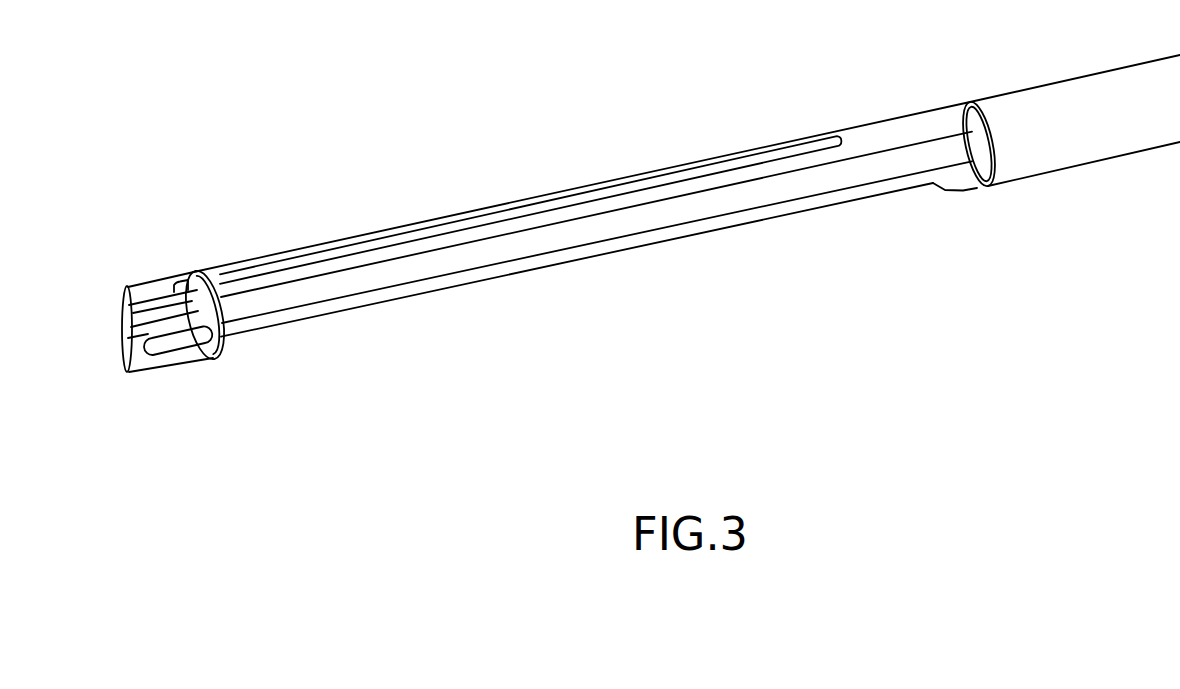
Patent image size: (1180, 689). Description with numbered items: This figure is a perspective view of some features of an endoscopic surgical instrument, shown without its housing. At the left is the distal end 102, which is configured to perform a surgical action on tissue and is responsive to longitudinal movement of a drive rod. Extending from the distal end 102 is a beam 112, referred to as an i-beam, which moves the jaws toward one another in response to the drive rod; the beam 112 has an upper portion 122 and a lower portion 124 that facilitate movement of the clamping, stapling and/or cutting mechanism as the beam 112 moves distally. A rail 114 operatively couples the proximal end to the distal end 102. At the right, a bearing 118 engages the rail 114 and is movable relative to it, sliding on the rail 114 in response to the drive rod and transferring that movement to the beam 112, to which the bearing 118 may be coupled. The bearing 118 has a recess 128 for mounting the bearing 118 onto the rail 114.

The distal end 102 is at (172, 328).
The beam 112 is at (880, 132).
The rail 114 is at (527, 246).
The bearing 118 is at (1028, 163).
The upper portion 122 is at (457, 213).
The lower portion 124 is at (448, 290).
The recess 128 is at (982, 182).